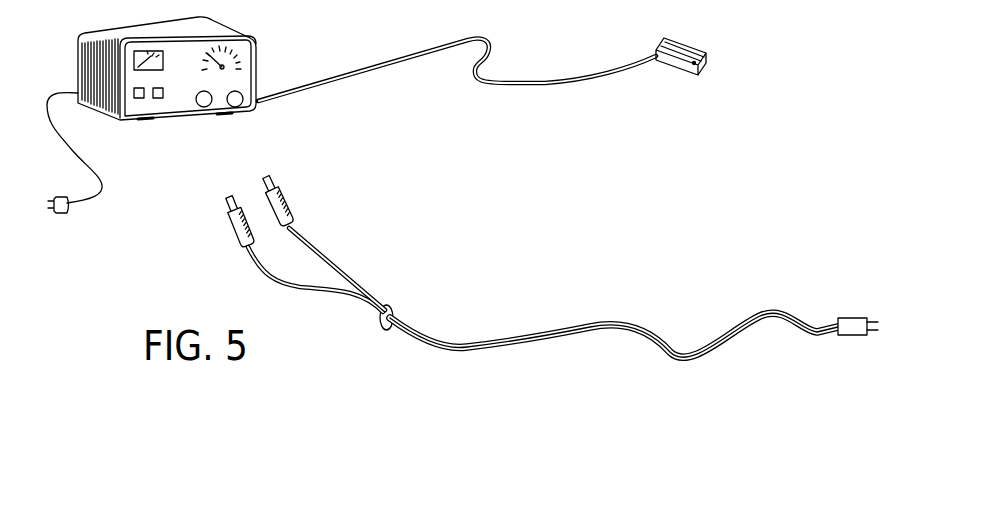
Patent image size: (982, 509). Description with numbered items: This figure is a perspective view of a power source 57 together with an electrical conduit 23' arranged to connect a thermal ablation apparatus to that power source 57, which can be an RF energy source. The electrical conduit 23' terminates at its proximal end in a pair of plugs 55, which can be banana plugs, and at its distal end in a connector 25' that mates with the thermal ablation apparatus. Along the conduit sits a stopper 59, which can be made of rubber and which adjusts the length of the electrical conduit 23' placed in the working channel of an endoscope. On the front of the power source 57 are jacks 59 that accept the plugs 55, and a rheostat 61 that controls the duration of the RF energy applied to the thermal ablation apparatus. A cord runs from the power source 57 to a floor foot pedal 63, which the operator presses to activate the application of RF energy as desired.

The power source 57 is at (258, 62).
The rheostat 61 is at (236, 43).
The jacks / stopper 59 is at (203, 107).
The floor foot pedal 63 is at (700, 71).
The plugs 55 is at (227, 201).
The electrical conduit 23' is at (543, 292).
The connector 25' is at (855, 355).